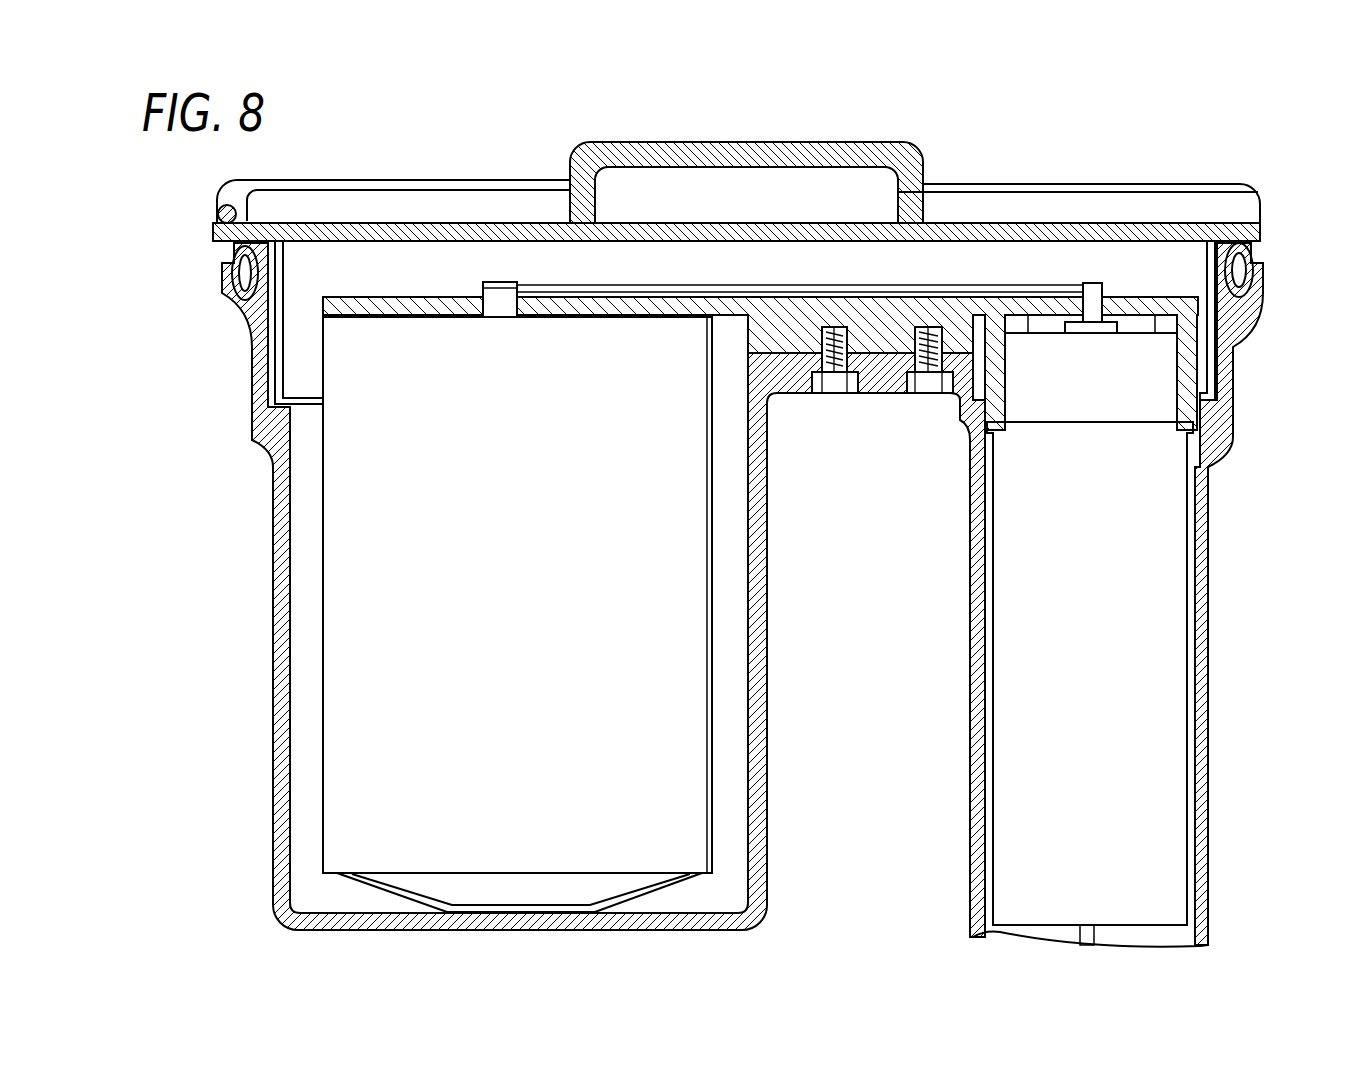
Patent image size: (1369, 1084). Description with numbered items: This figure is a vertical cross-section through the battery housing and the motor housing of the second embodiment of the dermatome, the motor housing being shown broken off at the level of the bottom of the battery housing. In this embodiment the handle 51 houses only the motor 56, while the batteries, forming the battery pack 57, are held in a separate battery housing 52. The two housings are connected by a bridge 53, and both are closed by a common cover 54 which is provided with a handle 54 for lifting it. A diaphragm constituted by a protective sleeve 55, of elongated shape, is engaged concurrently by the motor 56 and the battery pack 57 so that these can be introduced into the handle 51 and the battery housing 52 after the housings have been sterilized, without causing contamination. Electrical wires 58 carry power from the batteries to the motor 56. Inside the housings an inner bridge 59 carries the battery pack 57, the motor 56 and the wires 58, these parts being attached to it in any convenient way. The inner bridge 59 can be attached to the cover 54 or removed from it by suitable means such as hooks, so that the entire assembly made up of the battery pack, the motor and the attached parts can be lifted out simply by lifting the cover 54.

The handle 51 is at (1212, 773).
The battery housing 52 is at (273, 627).
The bridge 53 is at (885, 377).
The common cover 54 is at (905, 160).
The protective sleeve 55 is at (272, 355).
The motor 56 is at (1163, 580).
The battery pack 57 is at (332, 790).
The electrical wires 58 is at (1043, 293).
The inner bridge 59 is at (878, 333).